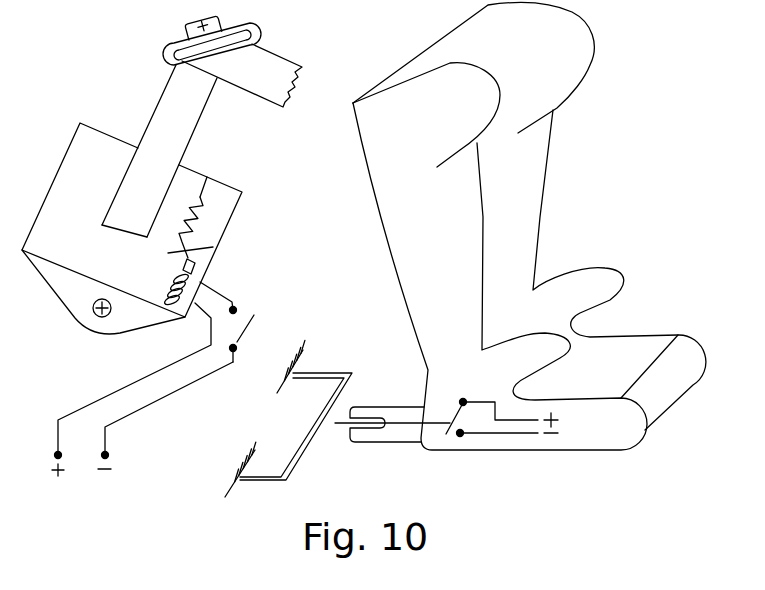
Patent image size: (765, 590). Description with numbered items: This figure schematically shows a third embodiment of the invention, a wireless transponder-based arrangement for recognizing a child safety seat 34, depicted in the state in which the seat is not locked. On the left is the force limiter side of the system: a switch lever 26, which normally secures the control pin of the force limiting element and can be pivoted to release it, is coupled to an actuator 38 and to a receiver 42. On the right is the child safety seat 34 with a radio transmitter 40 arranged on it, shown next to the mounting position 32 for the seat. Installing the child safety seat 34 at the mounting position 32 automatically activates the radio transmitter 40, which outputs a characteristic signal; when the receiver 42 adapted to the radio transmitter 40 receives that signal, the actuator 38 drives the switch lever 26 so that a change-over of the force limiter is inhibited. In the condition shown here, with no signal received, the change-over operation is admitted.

The switch lever 26 is at (197, 248).
The actuator 38 is at (193, 270).
The receiver 42 is at (248, 313).
The mounting position 32 is at (335, 370).
The child safety seat 34 is at (533, 200).
The radio transmitter 40 is at (473, 392).